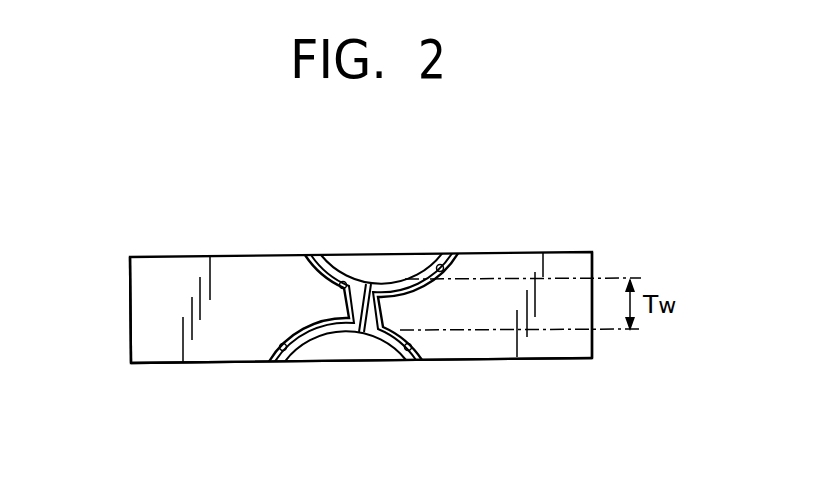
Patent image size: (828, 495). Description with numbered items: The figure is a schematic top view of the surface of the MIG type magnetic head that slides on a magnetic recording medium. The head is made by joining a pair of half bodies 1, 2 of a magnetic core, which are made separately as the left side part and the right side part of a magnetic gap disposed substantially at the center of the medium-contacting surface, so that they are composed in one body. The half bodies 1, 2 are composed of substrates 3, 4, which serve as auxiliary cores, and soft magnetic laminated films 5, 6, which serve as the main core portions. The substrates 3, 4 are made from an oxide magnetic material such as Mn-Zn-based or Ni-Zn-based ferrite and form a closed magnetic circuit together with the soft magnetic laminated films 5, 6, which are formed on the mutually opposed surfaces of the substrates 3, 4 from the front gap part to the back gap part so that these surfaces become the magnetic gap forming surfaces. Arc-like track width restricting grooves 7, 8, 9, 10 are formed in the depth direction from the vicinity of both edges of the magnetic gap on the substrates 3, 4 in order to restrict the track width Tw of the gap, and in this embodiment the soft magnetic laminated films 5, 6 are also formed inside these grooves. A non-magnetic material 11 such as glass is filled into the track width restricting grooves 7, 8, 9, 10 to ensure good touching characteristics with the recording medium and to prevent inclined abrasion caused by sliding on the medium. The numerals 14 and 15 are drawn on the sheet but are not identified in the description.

The half body of magnetic core 1 is at (155, 255).
The half body of magnetic core 2 is at (558, 253).
The substrate 3 is at (153, 310).
The substrate 4 is at (570, 347).
The soft magnetic laminated film 5 is at (336, 276).
The soft magnetic laminated film 6 is at (418, 278).
The track width restricting groove 7 is at (340, 287).
The track width restricting groove 8 is at (286, 350).
The track width restricting groove 9 is at (454, 274).
The track width restricting groove 10 is at (404, 348).
The non-magnetic material 11 is at (385, 268).
The first coating layer 14 is at (306, 262).
The second coating layer 15 is at (446, 276).